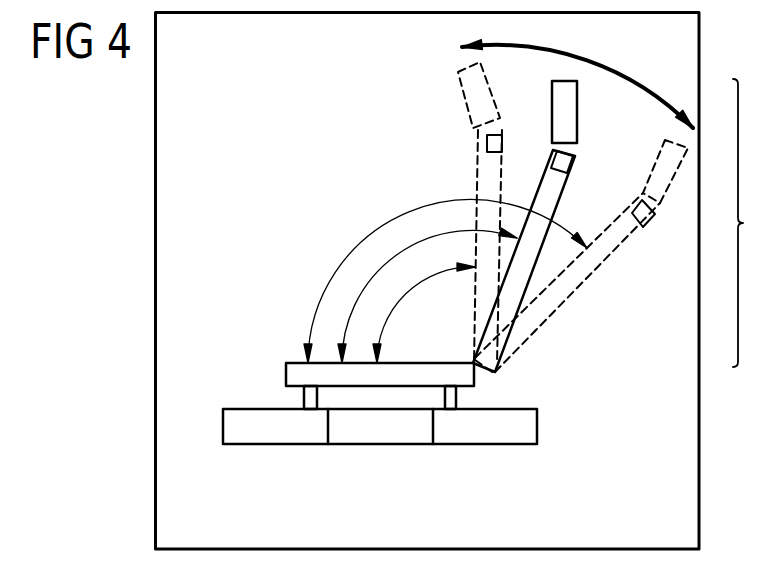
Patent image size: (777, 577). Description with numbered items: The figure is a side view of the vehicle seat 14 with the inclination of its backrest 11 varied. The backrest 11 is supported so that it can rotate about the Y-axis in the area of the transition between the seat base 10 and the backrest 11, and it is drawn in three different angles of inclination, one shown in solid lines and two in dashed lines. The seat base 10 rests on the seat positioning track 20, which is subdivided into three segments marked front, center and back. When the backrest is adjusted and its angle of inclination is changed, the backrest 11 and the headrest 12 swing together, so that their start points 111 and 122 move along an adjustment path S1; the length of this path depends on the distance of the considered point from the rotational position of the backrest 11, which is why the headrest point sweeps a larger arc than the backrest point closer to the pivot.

The seat base 10 is at (294, 375).
The seat positioning track 20 is at (513, 437).
The backrest 11 is at (581, 257).
The start point of the backrest 111 is at (646, 228).
The headrest 12 is at (657, 170).
The start point of the headrest 122 is at (646, 145).
The vehicle seat 14 is at (752, 223).
The adjustment path S1 is at (603, 68).